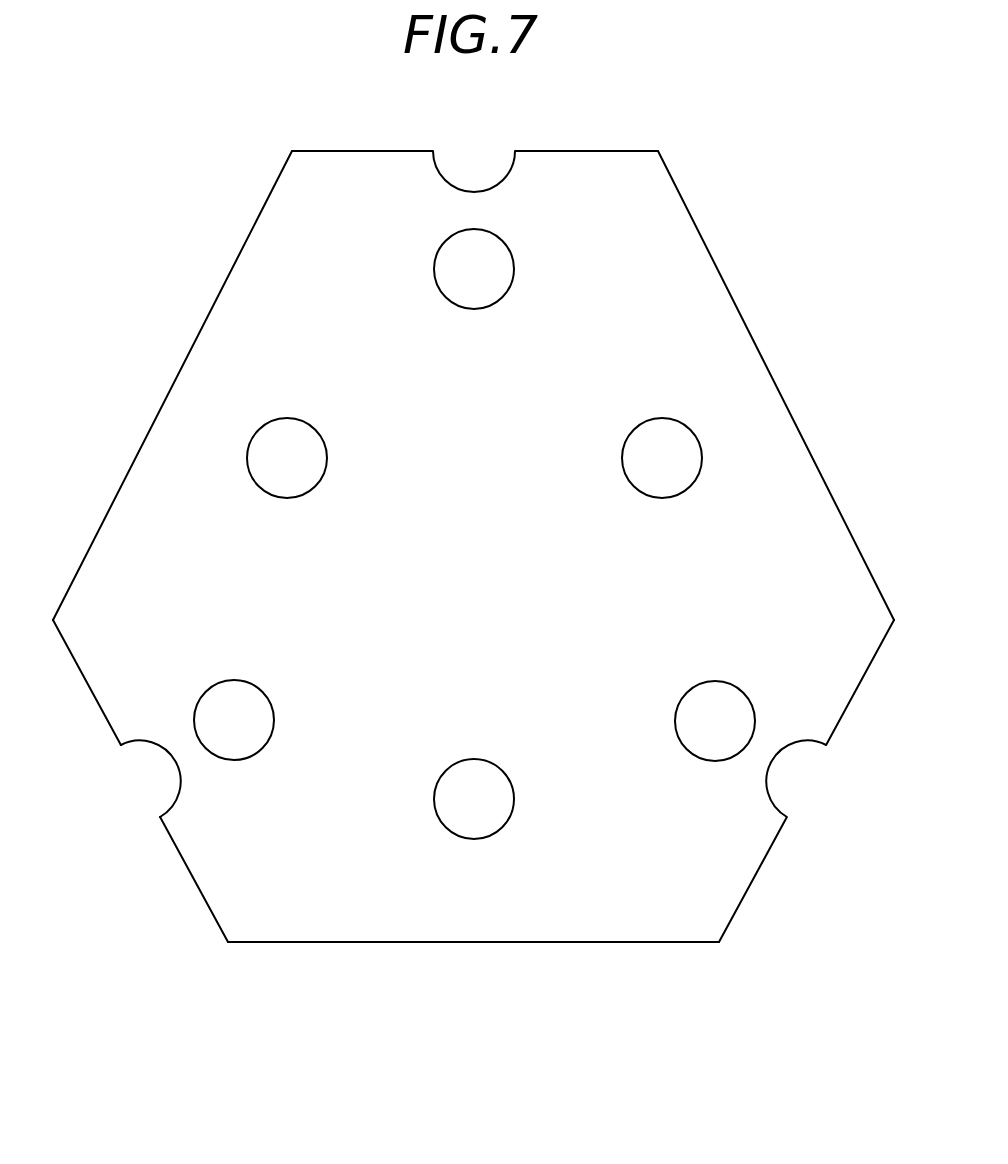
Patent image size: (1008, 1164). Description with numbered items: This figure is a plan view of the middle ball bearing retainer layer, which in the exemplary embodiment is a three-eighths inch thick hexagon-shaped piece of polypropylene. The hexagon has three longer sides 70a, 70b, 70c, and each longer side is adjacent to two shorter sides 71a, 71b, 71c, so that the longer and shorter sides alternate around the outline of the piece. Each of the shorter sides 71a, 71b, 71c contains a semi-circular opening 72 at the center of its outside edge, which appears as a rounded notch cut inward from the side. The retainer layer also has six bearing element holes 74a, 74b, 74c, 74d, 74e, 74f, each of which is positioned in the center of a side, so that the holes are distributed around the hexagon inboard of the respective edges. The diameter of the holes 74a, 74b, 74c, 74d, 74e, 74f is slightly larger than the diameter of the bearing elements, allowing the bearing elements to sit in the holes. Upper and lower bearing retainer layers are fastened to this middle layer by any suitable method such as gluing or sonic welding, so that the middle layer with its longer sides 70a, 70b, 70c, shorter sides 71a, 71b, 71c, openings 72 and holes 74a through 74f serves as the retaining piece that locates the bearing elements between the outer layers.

The longer side 70a is at (328, 942).
The longer side 70b is at (735, 305).
The longer side 70c is at (203, 323).
The shorter side 71a is at (208, 903).
The shorter side 71b is at (742, 903).
The shorter side 71c is at (570, 151).
The semi-circular opening 72 is at (158, 778).
The bearing element hole 74a is at (242, 760).
The bearing element hole 74b is at (474, 840).
The bearing element hole 74c is at (713, 762).
The bearing element hole 74d is at (685, 425).
The bearing element hole 74e is at (498, 270).
The bearing element hole 74f is at (265, 423).